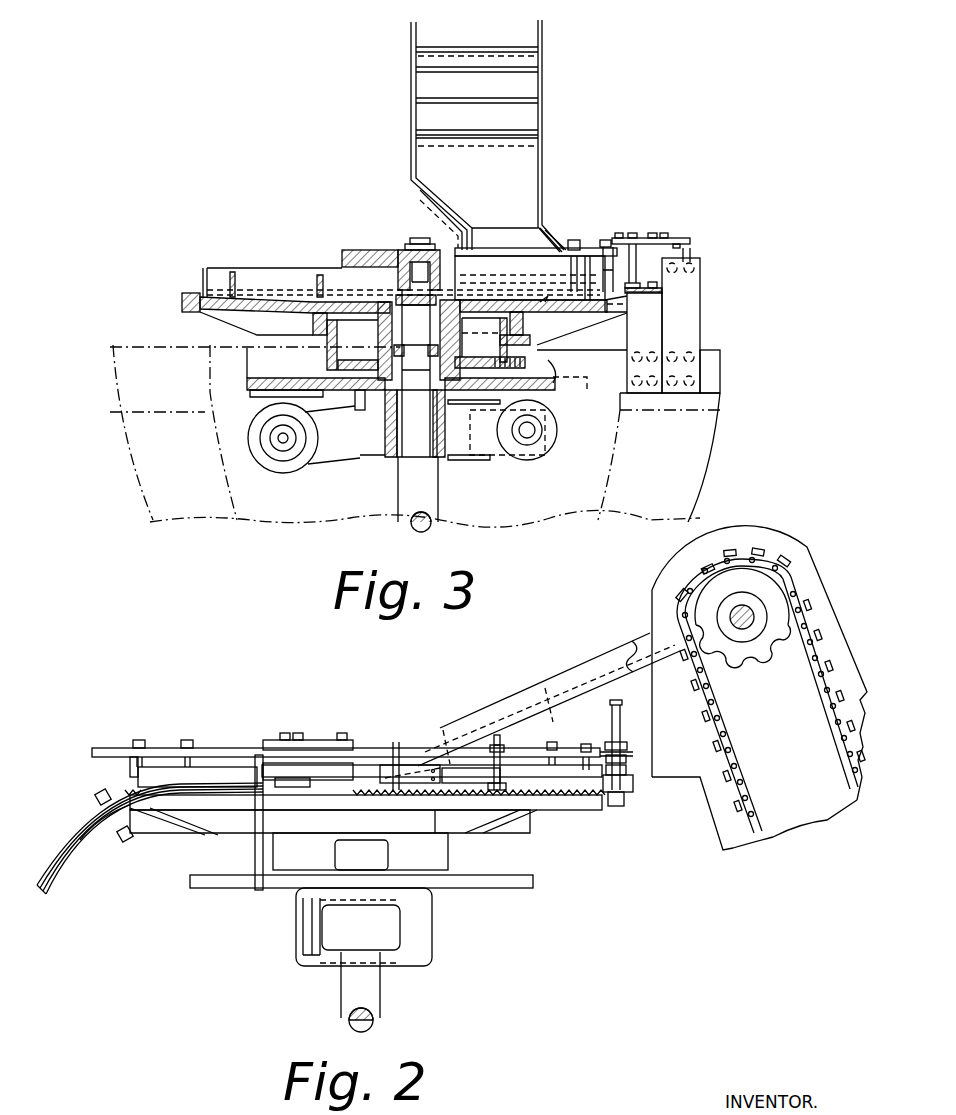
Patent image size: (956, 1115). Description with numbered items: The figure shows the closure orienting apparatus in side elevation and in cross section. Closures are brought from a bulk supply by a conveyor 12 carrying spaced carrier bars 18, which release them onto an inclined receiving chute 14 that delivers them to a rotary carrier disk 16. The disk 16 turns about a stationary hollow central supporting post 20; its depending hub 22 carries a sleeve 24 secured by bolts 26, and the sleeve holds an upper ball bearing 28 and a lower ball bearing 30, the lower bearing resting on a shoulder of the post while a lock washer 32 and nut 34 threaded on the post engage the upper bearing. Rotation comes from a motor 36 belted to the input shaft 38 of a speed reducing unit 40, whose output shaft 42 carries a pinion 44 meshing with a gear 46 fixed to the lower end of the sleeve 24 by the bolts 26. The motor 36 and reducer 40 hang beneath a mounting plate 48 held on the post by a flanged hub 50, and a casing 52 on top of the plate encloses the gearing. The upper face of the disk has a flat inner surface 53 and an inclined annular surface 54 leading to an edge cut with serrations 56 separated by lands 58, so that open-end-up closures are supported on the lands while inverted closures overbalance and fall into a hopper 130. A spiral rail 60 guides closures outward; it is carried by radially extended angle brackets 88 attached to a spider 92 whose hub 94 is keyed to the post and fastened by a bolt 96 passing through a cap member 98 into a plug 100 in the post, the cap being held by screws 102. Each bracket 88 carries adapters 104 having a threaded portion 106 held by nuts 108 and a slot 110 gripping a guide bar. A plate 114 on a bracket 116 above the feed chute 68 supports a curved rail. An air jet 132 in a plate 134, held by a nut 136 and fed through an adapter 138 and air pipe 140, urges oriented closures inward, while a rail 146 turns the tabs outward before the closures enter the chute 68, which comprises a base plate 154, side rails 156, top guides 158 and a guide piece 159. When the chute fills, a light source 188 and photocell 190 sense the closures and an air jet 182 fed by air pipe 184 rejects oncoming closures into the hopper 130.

In FIG. 3, the conveyor 12 is at (480, 37).
In FIG. 2, the conveyor 12 is at (808, 580).
In FIG. 3, the inclined receiving chute 14 is at (565, 213).
In FIG. 2, the inclined receiving chute 14 is at (527, 705).
In FIG. 3, the rotary carrier disk 16 is at (185, 306).
In FIG. 2, the rotary carrier disk 16 is at (598, 806).
In FIG. 2, the carrier bars 18 is at (757, 556).
In FIG. 3, the central supporting post 20 is at (438, 491).
In FIG. 2, the central supporting post 20 is at (380, 1000).
In FIG. 3, the depending hub 22 is at (372, 326).
In FIG. 3, the sleeve 24 is at (398, 310).
In FIG. 3, the bolts 26 is at (362, 411).
In FIG. 3, the upper ball bearing 28 is at (400, 300).
In FIG. 3, the lower ball bearing 30 is at (396, 376).
In FIG. 3, the lock washer 32 is at (416, 373).
In FIG. 3, the nut 34 is at (385, 300).
In FIG. 3, the motor 36 is at (271, 462).
In FIG. 3, the input shaft 38 is at (530, 440).
In FIG. 3, the speed reducing unit 40 is at (548, 433).
In FIG. 2, the speed reducing unit 40 is at (400, 930).
In FIG. 3, the output shaft 42 is at (478, 425).
In FIG. 3, the pinion 44 is at (556, 360).
In FIG. 3, the gear 46 is at (486, 372).
In FIG. 3, the mounting plate 48 is at (247, 384).
In FIG. 2, the mounting plate 48 is at (533, 886).
In FIG. 3, the flanged hub 50 is at (390, 462).
In FIG. 2, the flanged hub 50 is at (322, 958).
In FIG. 3, the casing 52 is at (548, 345).
In FIG. 2, the casing 52 is at (389, 860).
In FIG. 3, the flat inner surface 53 is at (548, 302).
In FIG. 3, the inclined annular surface 54 is at (200, 290).
In FIG. 3, the serrations 56 is at (186, 294).
In FIG. 2, the serrations 56 is at (532, 798).
In FIG. 2, the lands 58 is at (570, 798).
In FIG. 3, the spiral rail 60 is at (255, 268).
In FIG. 2, the spiral rail 60 is at (222, 763).
In FIG. 3, the feed chute 68 is at (672, 310).
In FIG. 2, the feed chute 68 is at (67, 884).
In FIG. 2, the angle brackets 88 is at (236, 748).
In FIG. 3, the spider 92 is at (355, 250).
In FIG. 3, the hub 94 is at (460, 258).
In FIG. 3, the bolt 96 is at (415, 247).
In FIG. 3, the cap member 98 is at (440, 248).
In FIG. 3, the plug 100 is at (400, 257).
In FIG. 3, the screws 102 is at (400, 243).
In FIG. 3, the adapters 104 is at (608, 262).
In FIG. 2, the adapters 104 is at (186, 741).
In FIG. 3, the threaded portion 106 is at (575, 240).
In FIG. 3, the nuts 108 is at (588, 262).
In FIG. 3, the slot 110 is at (583, 303).
In FIG. 3, the plate 114 is at (637, 238).
In FIG. 2, the plate 114 is at (395, 742).
In FIG. 3, the bracket 116 is at (690, 243).
In FIG. 2, the bracket 116 is at (313, 740).
In FIG. 3, the hopper 130 is at (712, 437).
In FIG. 2, the air jet 132 is at (616, 794).
In FIG. 2, the plate 134 is at (632, 760).
In FIG. 2, the nut 136 is at (622, 752).
In FIG. 2, the adapter 138 is at (612, 735).
In FIG. 2, the air pipe 140 is at (617, 715).
In FIG. 2, the rail 146 is at (380, 796).
In FIG. 3, the base plate 154 is at (641, 297).
In FIG. 2, the base plate 154 is at (92, 840).
In FIG. 3, the side rails 156 is at (663, 292).
In FIG. 2, the side rails 156 is at (105, 828).
In FIG. 3, the top guides 158 is at (658, 284).
In FIG. 2, the top guides 158 is at (95, 830).
In FIG. 2, the guide piece 159 is at (295, 788).
In FIG. 2, the air jet 182 is at (498, 774).
In FIG. 2, the air pipe 184 is at (470, 745).
In FIG. 2, the light source 188 is at (98, 793).
In FIG. 2, the photocell 190 is at (134, 838).